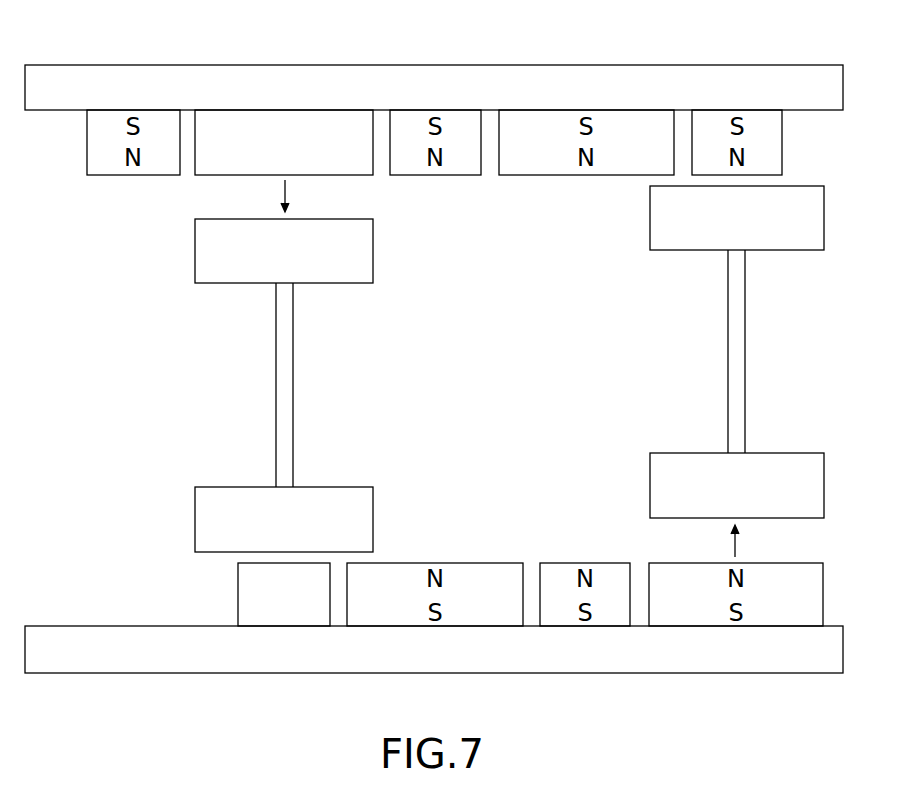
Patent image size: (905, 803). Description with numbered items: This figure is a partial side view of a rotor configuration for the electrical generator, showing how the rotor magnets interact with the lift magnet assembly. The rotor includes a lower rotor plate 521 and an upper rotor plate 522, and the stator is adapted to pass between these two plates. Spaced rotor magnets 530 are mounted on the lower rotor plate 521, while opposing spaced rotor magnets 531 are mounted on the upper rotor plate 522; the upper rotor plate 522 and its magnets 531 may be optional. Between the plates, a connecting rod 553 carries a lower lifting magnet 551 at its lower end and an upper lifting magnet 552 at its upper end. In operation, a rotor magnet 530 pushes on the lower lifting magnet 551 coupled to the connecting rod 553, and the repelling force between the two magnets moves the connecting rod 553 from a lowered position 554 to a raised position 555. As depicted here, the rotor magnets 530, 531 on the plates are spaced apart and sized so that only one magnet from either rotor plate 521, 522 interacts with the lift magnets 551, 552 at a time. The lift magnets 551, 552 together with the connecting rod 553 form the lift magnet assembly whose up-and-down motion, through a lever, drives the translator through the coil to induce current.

The lower rotor plate 521 is at (730, 665).
The upper rotor plate 522 is at (745, 75).
The rotor magnets 530 is at (238, 585).
The opposing rotor magnets 531 is at (317, 163).
The lower lifting magnet 551 is at (373, 530).
The upper lifting magnet 552 is at (360, 261).
The connecting rod 553 is at (290, 398).
The lowered position 554 is at (351, 385).
The raised position 555 is at (778, 400).